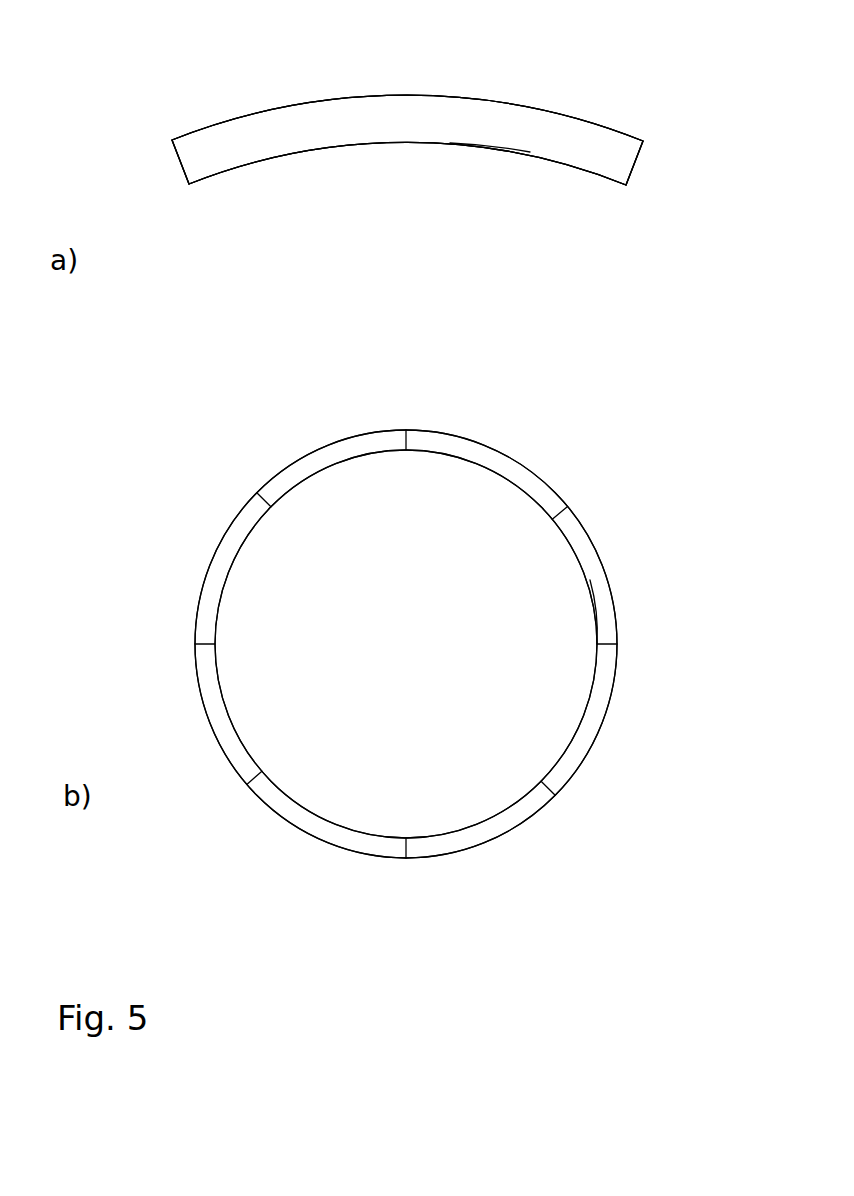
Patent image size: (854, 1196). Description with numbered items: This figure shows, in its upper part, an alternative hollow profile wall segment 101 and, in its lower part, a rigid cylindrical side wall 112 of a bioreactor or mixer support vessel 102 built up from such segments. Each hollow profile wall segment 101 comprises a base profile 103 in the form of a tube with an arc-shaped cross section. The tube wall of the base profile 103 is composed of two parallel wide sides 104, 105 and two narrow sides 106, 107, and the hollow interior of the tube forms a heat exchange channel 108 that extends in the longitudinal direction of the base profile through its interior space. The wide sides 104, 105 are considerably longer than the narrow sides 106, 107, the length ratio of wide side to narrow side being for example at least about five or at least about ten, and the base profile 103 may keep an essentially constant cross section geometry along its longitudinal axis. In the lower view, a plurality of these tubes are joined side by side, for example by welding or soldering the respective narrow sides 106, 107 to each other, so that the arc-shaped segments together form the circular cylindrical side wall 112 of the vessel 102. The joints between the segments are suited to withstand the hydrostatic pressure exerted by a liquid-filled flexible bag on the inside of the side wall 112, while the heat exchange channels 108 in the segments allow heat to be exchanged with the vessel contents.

The hollow profile wall segment 101 is at (407, 195).
The bioreactor or mixer support vessel 102 is at (170, 622).
The base profile 103 is at (317, 147).
The wide side 104 is at (488, 147).
The wide side 105 is at (470, 98).
The narrow side 106 is at (177, 160).
The narrow side 107 is at (637, 162).
The heat exchange channel 108 is at (345, 118).
The side wall 112 is at (165, 677).